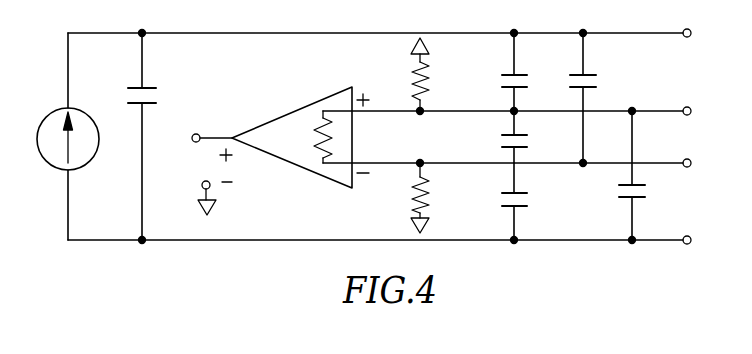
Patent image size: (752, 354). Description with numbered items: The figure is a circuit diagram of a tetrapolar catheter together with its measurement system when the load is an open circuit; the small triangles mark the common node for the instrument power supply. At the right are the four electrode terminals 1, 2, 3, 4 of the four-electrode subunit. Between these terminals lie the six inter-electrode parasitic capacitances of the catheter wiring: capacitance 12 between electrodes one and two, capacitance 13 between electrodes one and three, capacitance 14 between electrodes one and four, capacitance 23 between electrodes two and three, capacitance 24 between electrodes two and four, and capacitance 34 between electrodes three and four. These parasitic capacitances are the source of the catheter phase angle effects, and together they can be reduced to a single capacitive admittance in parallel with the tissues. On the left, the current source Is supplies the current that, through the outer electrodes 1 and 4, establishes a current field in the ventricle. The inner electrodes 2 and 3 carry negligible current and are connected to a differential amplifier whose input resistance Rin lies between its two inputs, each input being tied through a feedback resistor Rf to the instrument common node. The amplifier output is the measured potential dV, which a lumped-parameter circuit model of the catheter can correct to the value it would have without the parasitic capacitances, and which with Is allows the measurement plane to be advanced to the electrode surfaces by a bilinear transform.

The catheter electrode # 1 is at (680, 43).
The catheter electrode # 2 is at (679, 124).
The catheter electrode # 3 is at (679, 175).
The catheter electrode # 4 is at (681, 226).
The inter-electrode parasitic capacitance between electrodes 1 and 2 12 is at (493, 72).
The inter-electrode parasitic capacitance between electrodes 1 and 3 13 is at (602, 98).
The inter-electrode parasitic capacitance between electrodes 1 and 4 14 is at (162, 97).
The inter-electrode parasitic capacitance between electrodes 2 and 3 23 is at (493, 137).
The inter-electrode parasitic capacitance between electrodes 2 and 4 24 is at (613, 176).
The inter-electrode parasitic capacitance between electrodes 3 and 4 34 is at (493, 203).
The current-source output Is is at (70, 152).
The input resistance Rin is at (305, 137).
The feedback resistor Rf is at (407, 76).
The measured potential dV is at (207, 174).